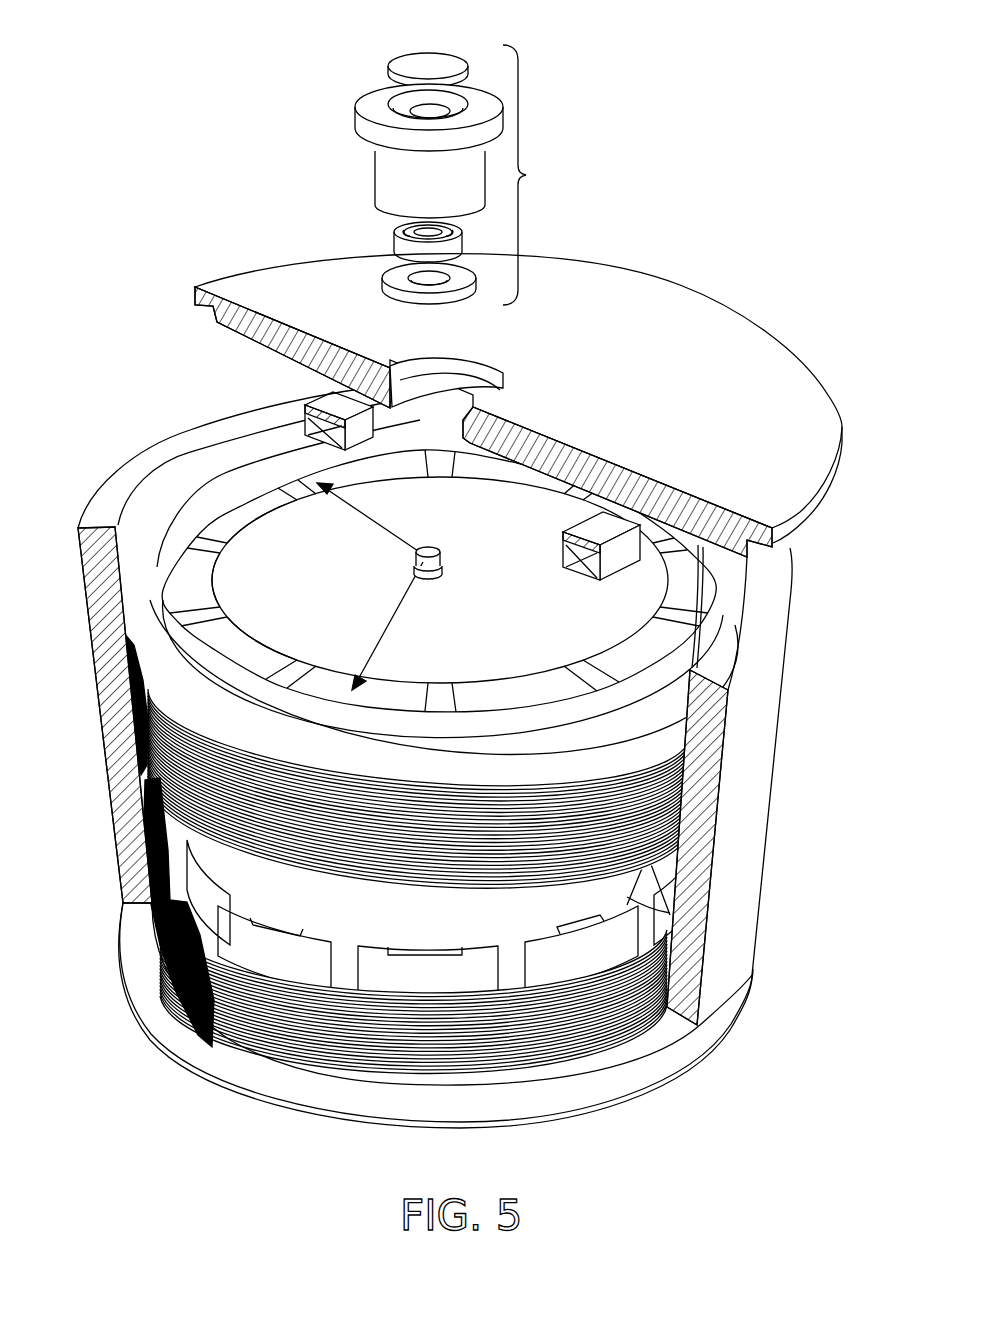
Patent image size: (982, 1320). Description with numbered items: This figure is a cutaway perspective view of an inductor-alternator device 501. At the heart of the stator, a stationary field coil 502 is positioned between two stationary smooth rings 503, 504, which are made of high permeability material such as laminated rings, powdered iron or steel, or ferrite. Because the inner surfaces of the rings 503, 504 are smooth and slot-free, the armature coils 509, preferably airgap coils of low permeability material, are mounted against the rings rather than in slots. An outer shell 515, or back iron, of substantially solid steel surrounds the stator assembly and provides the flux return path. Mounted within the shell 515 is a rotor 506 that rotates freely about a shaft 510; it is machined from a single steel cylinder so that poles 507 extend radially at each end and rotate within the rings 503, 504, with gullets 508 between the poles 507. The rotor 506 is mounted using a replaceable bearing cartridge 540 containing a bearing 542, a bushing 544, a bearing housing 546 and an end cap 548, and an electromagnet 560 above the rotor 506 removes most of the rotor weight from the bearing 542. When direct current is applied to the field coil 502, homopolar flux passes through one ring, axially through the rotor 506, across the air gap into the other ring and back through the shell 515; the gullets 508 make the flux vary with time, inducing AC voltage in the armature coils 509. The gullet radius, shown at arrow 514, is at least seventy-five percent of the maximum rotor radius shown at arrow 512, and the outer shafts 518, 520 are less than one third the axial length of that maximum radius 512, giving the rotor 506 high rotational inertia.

The inductor-alternator device 501 is at (630, 228).
The stationary field coil 502 is at (667, 860).
The stationary smooth ring 503 is at (400, 772).
The stationary smooth ring 504 is at (603, 1037).
The rotor 506 is at (250, 523).
The poles 507 is at (195, 594).
The gullets 508 is at (225, 520).
The armature coils 509 is at (233, 668).
The shaft 510 is at (440, 548).
The arrow indicating maximum radius of rotor 512 is at (395, 612).
The arrow indicating gullet radius of rotor 514 is at (363, 513).
The outer shell 515 is at (777, 720).
The outer shaft 518 is at (445, 566).
The outer shaft 520 is at (155, 1058).
The replaceable bearing cartridge 540 is at (543, 175).
The bearing 542 is at (395, 240).
The bushing 544 is at (382, 283).
The bearing housing 546 is at (355, 108).
The end cap 548 is at (445, 58).
The electromagnet 560 is at (608, 560).